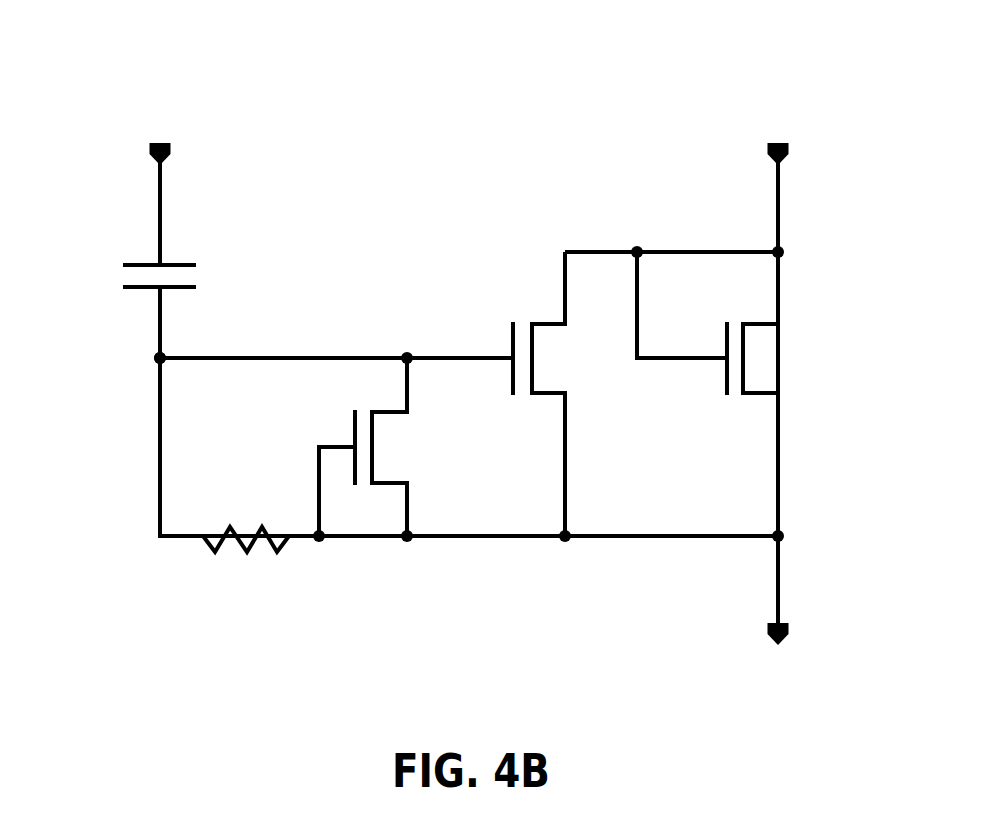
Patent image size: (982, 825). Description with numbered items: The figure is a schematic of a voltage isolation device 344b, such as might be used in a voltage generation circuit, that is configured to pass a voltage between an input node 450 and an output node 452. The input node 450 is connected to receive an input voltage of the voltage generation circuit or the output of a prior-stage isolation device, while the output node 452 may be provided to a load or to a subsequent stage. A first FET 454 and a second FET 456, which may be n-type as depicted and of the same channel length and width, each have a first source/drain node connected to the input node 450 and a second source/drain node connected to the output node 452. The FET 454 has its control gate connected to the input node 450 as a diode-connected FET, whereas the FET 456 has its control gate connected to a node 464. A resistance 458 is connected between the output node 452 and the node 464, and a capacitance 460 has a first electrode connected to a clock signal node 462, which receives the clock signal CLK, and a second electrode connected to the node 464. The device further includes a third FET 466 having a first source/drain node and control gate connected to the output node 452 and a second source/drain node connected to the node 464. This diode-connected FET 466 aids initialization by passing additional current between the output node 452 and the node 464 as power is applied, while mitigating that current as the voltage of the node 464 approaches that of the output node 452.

The voltage isolation device 344b is at (387, 125).
The input node 450 is at (767, 145).
The output node 452 is at (767, 625).
The first field-effect transistor 454 is at (762, 398).
The second field-effect transistor 456 is at (548, 398).
The resistance 458 is at (262, 527).
The capacitance 460 is at (140, 263).
The clock signal node 462 is at (150, 146).
The node 464 is at (153, 365).
The third field-effect transistor 466 is at (390, 410).